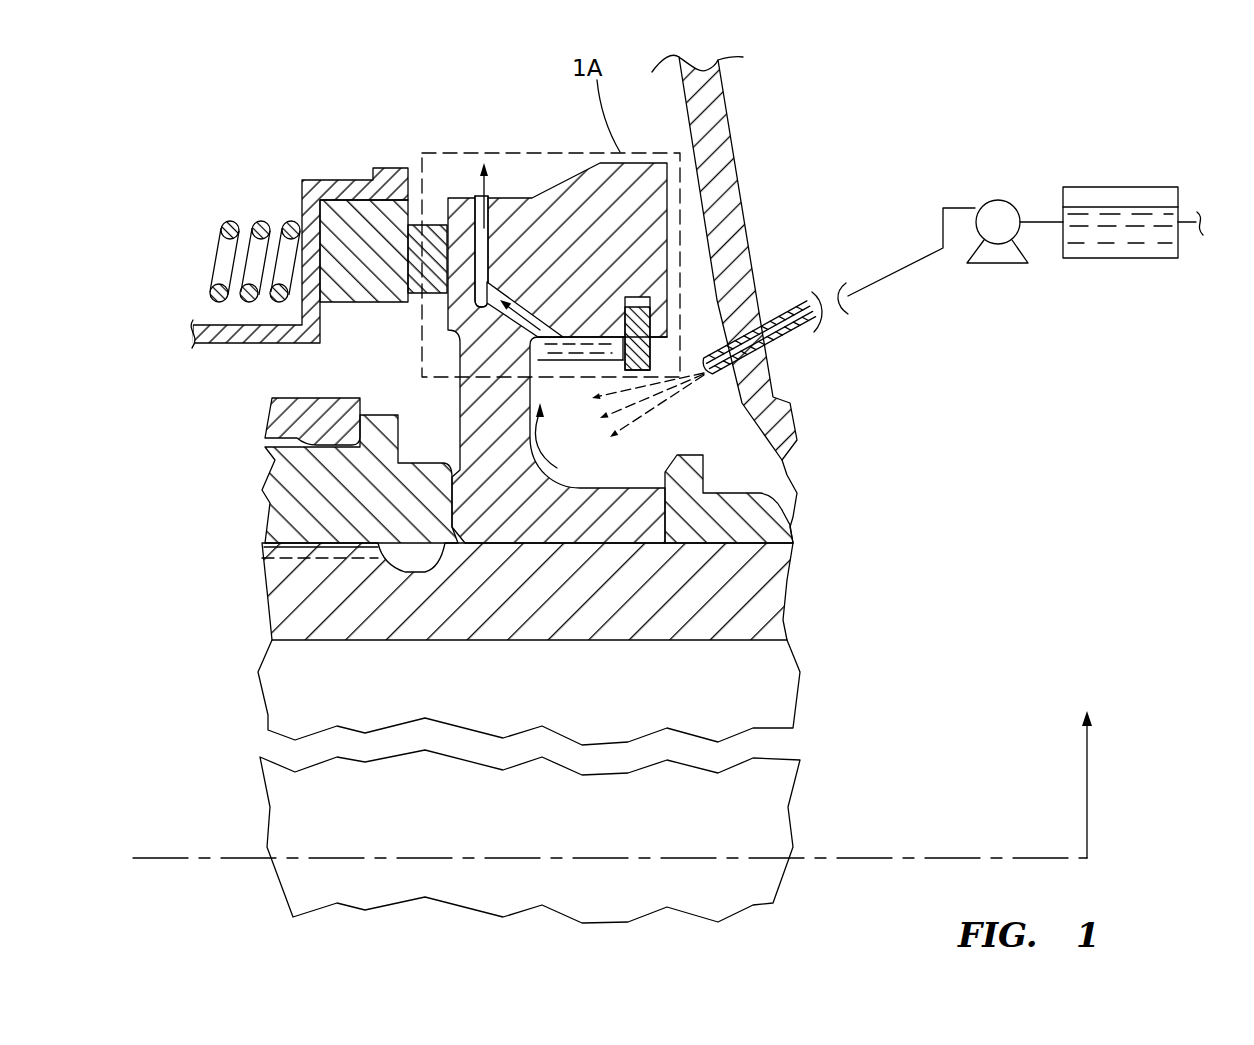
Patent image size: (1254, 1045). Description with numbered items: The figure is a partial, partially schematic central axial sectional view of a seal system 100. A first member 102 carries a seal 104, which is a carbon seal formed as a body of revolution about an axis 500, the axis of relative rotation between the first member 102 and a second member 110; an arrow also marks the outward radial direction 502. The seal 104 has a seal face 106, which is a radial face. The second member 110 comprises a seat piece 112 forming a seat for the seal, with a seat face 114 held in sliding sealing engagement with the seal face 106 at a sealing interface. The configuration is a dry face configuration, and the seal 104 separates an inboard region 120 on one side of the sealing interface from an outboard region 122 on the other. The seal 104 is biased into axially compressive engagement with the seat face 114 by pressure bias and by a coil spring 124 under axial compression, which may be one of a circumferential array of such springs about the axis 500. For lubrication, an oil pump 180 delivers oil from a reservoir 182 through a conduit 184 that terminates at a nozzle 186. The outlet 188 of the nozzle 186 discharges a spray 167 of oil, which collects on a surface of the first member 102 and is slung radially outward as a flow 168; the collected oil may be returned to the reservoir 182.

The seal system 100 is at (668, 477).
The first member 102 is at (343, 188).
The seal 104 is at (350, 287).
The seal face 106 is at (478, 270).
The second member 110 is at (643, 195).
The seat piece 112 is at (565, 196).
The seat face 114 is at (437, 250).
The inboard region 120 is at (320, 384).
The outboard region 122 is at (467, 185).
The spring 124 is at (250, 217).
The spray 167 is at (645, 420).
The flow 168 is at (538, 447).
The oil pump 180 is at (996, 192).
The reservoir 182 is at (1123, 188).
The conduit 184 is at (910, 265).
The nozzle 186 is at (788, 331).
The outlet 188 is at (710, 372).
The axis 500 is at (895, 856).
The outward radial direction 502 is at (1087, 765).